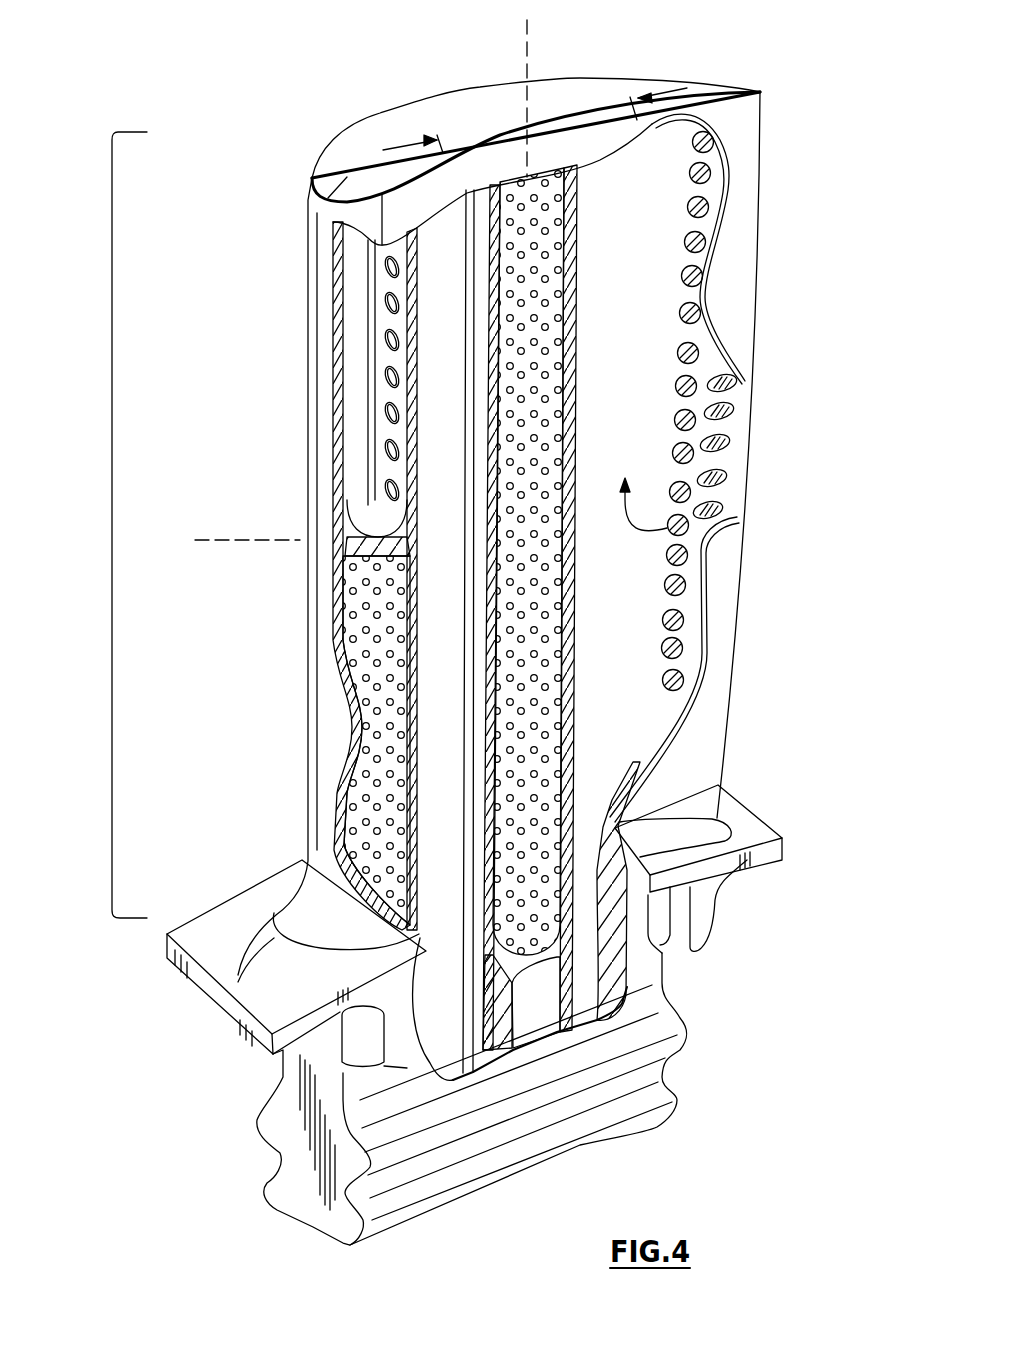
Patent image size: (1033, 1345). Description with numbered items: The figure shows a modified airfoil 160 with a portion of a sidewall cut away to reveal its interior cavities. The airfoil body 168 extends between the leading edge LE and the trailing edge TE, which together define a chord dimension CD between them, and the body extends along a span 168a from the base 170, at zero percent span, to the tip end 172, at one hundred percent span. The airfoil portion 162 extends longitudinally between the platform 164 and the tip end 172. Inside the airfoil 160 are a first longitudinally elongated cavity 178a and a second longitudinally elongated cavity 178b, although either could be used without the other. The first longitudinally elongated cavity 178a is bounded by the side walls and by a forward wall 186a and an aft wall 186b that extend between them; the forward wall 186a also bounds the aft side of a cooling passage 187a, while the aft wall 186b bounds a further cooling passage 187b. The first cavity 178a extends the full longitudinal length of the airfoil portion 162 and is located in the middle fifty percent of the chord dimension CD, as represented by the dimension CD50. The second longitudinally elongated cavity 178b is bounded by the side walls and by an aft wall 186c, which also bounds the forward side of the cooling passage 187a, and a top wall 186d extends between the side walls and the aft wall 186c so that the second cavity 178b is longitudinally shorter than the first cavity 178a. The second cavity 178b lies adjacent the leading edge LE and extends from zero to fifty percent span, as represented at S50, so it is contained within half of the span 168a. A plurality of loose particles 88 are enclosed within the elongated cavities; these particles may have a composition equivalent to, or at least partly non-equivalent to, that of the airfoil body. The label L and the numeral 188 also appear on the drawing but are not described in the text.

The airfoil 160 is at (246, 744).
The airfoil portion 162 is at (726, 580).
The platform 164 is at (751, 829).
The airfoil body 168 is at (695, 719).
The span 168a is at (110, 500).
The base 170 is at (232, 983).
The tip end 172 is at (360, 132).
The first longitudinally elongated cavity 178a is at (556, 372).
The second longitudinally elongated cavity 178b is at (360, 661).
The forward wall 186a is at (513, 300).
The aft wall 186b is at (574, 330).
The aft wall 186c is at (416, 713).
The top wall 186d is at (372, 548).
The cooling passage 187a is at (447, 600).
The cooling passage 187b is at (687, 527).
The cavity wall 188 is at (355, 615).
The loose particles 88 is at (556, 476).
The chord dimension CD is at (318, 180).
The middle fifty percent of the chord dimension CD50 is at (662, 82).
The centerline L is at (528, 162).
The leading edge LE is at (300, 395).
The trailing edge TE is at (758, 401).
The fifty percent span S50 is at (232, 541).